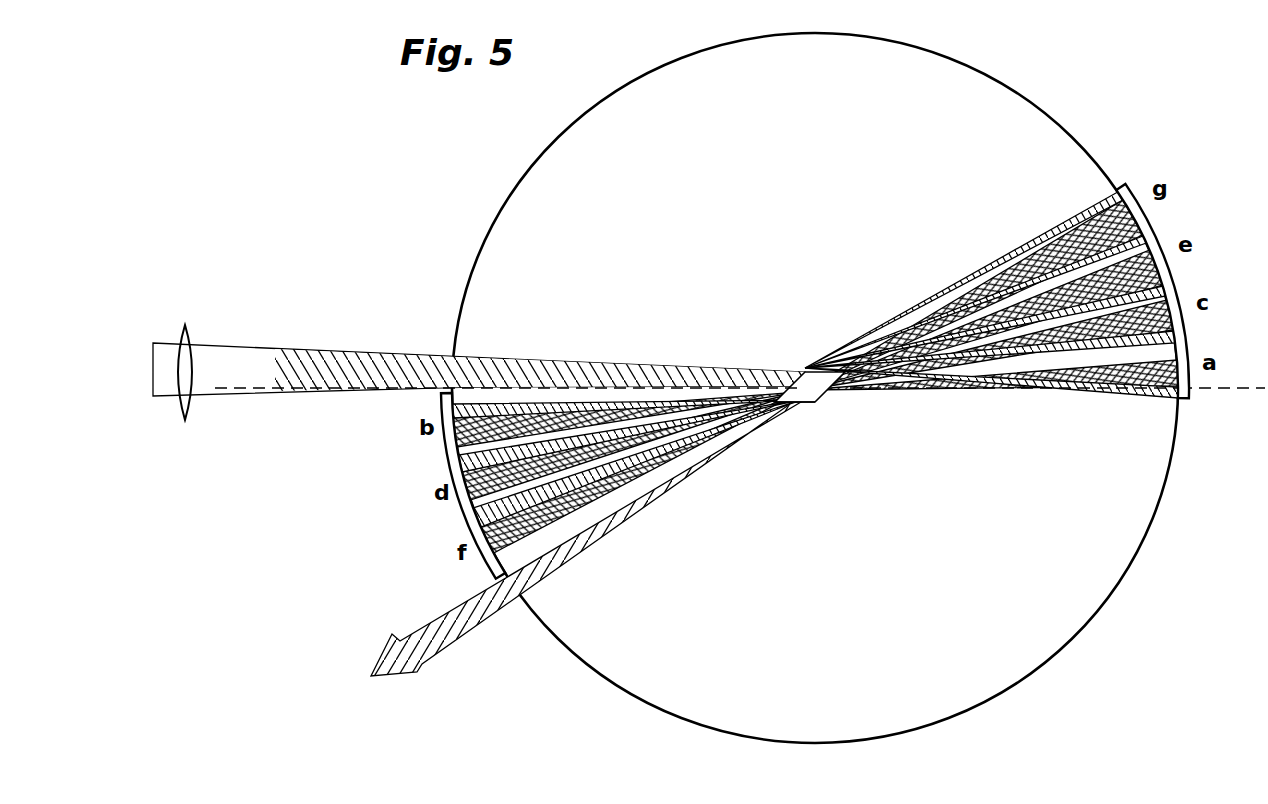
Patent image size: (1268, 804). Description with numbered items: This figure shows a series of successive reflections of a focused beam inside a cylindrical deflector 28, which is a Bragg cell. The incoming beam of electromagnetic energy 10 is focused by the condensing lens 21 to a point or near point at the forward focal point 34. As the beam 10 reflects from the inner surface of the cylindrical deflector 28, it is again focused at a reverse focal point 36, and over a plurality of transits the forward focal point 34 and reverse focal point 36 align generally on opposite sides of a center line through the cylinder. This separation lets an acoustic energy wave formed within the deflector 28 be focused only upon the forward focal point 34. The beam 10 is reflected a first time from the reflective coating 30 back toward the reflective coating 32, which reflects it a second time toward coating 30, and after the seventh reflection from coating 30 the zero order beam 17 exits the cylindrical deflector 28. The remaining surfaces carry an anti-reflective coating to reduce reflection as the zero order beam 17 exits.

The incident beam 10 is at (312, 348).
The zero order beam 17 is at (443, 648).
The convex lens 21 is at (189, 331).
The cylindrical deflector 28 is at (1074, 638).
The reflective coating 30 is at (1177, 281).
The reflective coating 32 is at (462, 523).
The forward focal point 34 is at (806, 371).
The reverse focal point 36 is at (808, 403).